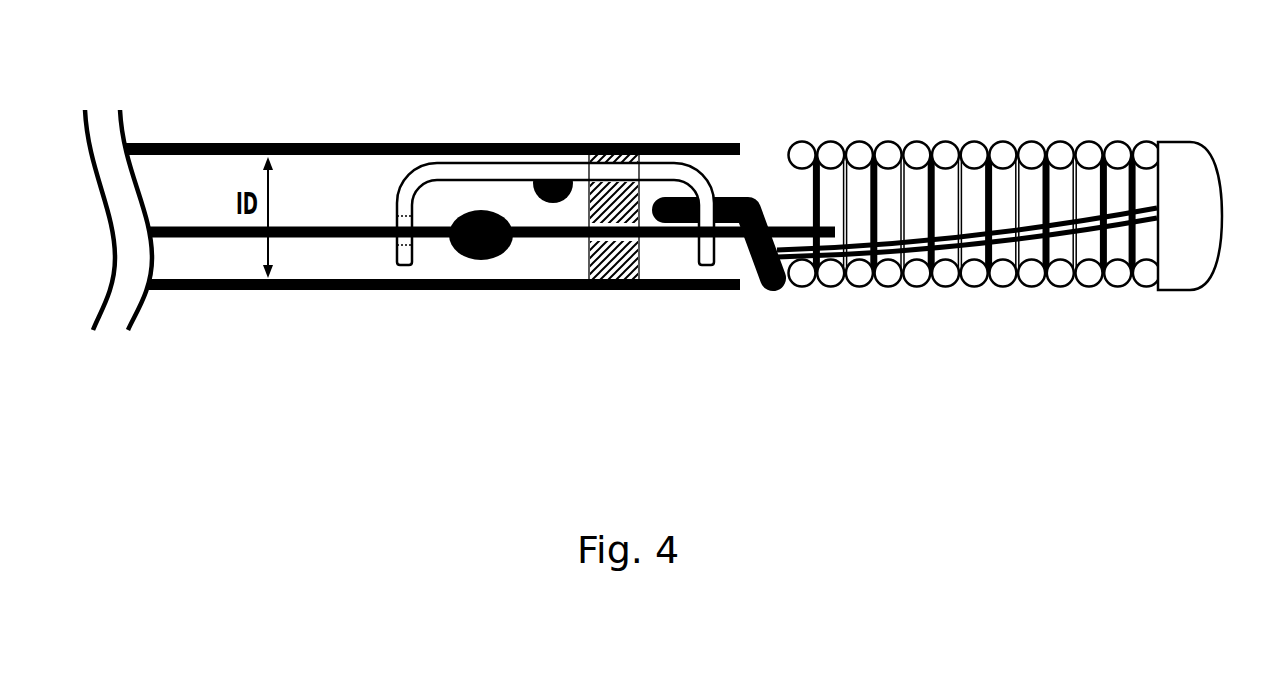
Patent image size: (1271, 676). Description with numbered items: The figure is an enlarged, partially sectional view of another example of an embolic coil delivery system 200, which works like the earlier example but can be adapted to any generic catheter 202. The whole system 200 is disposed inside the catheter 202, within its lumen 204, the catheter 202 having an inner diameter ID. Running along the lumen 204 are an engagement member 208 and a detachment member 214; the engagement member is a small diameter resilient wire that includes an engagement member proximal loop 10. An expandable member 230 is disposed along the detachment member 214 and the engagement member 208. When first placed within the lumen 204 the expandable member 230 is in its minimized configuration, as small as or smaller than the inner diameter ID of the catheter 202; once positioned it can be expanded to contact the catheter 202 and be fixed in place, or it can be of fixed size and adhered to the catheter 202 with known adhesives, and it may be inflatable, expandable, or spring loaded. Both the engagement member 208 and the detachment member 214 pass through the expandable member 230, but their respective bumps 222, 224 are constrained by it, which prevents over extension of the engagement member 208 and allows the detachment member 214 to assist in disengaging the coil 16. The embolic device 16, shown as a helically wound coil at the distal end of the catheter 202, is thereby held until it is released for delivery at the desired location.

The catheter 202 is at (213, 167).
The lumen 204 is at (195, 259).
The detachment member 214 is at (328, 249).
The engagement member proximal loop 10 is at (387, 202).
The engagement member 208 is at (664, 160).
The bump 222 is at (553, 220).
The bump 224 is at (440, 263).
The expandable member 230 is at (620, 257).
The embolic device 16 is at (895, 147).
The embolic coil delivery system 200 is at (771, 360).